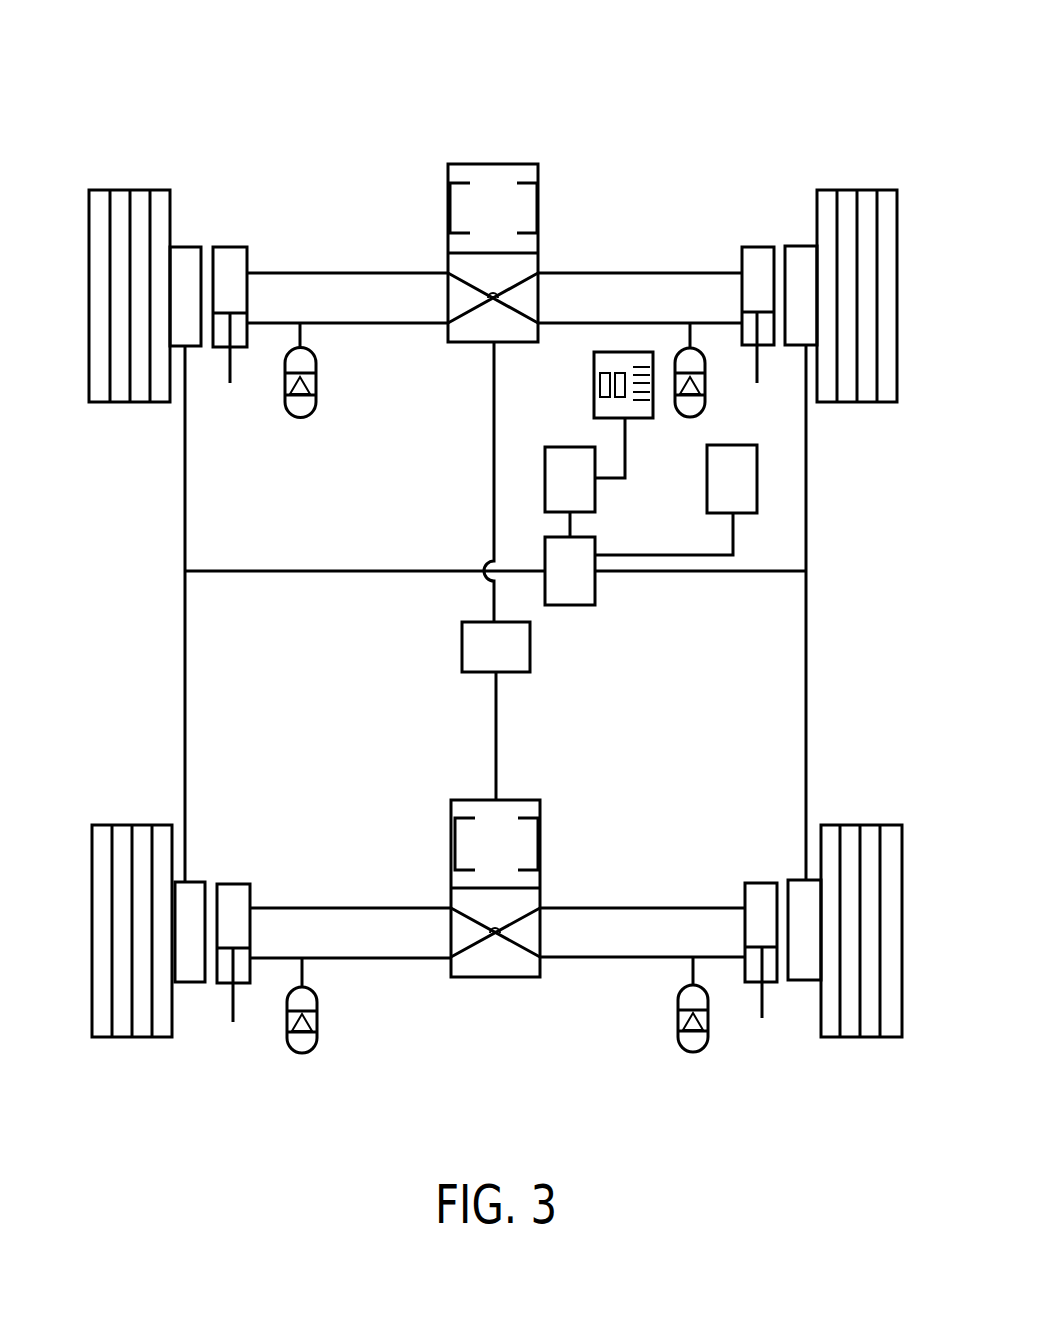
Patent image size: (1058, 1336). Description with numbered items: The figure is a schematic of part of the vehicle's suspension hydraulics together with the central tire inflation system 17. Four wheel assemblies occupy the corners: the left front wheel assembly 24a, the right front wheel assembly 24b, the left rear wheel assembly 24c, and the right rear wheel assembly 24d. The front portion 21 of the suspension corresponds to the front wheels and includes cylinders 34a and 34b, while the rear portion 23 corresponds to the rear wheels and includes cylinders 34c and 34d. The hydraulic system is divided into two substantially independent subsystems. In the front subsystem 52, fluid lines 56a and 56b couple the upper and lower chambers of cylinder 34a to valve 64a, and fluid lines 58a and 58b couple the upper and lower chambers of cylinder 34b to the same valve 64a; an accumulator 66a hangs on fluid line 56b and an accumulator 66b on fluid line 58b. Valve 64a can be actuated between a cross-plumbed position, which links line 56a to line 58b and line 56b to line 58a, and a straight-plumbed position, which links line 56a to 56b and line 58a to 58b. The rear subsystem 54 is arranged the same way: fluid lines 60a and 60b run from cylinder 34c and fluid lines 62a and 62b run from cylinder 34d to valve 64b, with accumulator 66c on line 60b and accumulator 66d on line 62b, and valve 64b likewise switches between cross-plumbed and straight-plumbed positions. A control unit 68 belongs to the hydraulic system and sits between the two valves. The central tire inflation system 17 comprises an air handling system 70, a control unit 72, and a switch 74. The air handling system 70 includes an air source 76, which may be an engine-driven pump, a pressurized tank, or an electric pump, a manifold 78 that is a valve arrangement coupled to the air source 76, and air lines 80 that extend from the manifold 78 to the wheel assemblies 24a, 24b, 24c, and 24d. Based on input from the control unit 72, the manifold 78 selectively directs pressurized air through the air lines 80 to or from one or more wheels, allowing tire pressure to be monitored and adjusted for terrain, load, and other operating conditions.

The central tire inflation system 17 is at (815, 722).
The front portion 21 is at (244, 396).
The rear portion 23 is at (244, 1043).
The left front wheel assembly 24a is at (120, 189).
The right front wheel assembly 24b is at (845, 189).
The left rear wheel assembly 24c is at (120, 824).
The right rear wheel assembly 24d is at (870, 824).
The cylinder 34a is at (228, 243).
The cylinder 34b is at (757, 243).
The cylinder 34c is at (233, 880).
The cylinder 34d is at (762, 878).
The subsystem 52 is at (440, 98).
The subsystem 54 is at (473, 1048).
The fluid line 56a is at (346, 272).
The fluid line 56b is at (346, 322).
The fluid line 58a is at (638, 272).
The fluid line 58b is at (638, 322).
The fluid line 60a is at (351, 907).
The fluid line 60b is at (351, 957).
The fluid line 62a is at (646, 907).
The fluid line 62b is at (646, 956).
The valve 64a is at (496, 160).
The valve 64b is at (498, 983).
The accumulator 66a is at (310, 414).
The accumulator 66b is at (700, 408).
The accumulator 66c is at (312, 1051).
The accumulator 66d is at (703, 1051).
The control unit 68 is at (462, 644).
The air handling system 70 is at (582, 627).
The control unit 72 is at (570, 446).
The switch 74 is at (594, 383).
The air source 76 is at (707, 480).
The manifold 78 is at (545, 556).
The air lines 80 is at (185, 511).